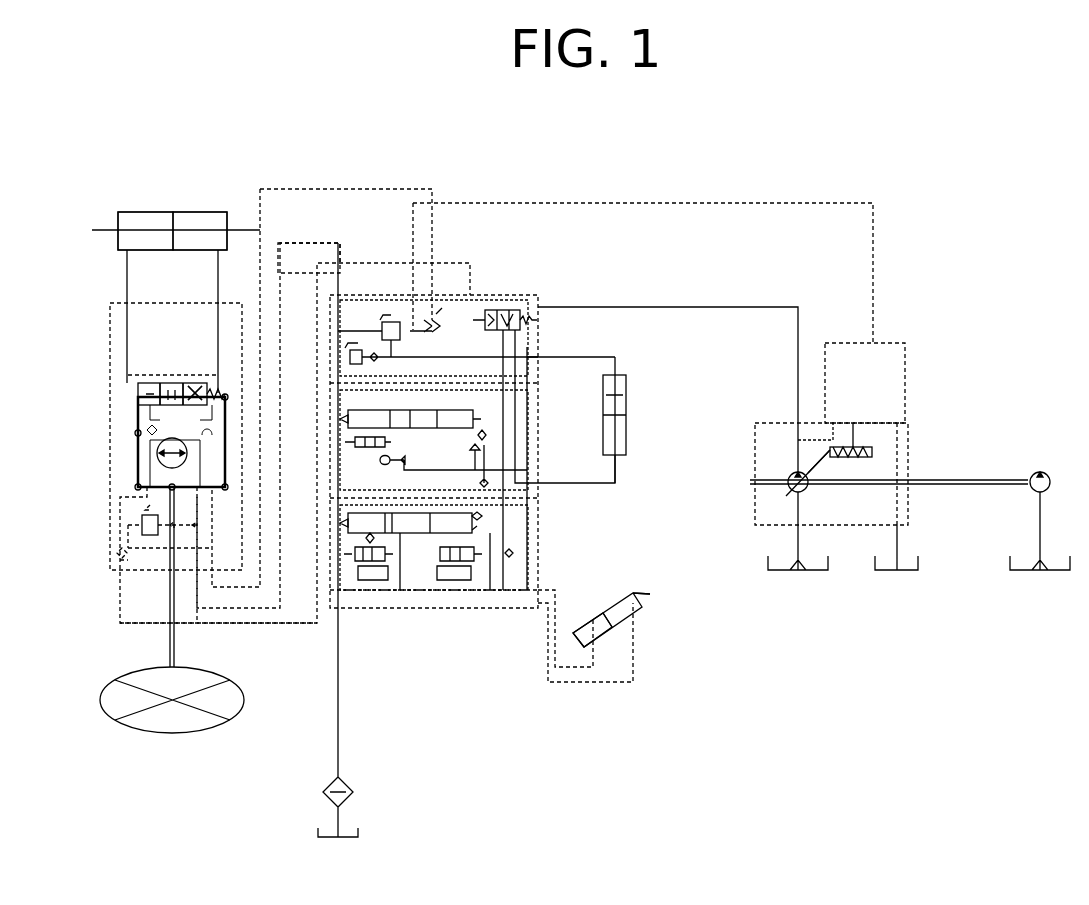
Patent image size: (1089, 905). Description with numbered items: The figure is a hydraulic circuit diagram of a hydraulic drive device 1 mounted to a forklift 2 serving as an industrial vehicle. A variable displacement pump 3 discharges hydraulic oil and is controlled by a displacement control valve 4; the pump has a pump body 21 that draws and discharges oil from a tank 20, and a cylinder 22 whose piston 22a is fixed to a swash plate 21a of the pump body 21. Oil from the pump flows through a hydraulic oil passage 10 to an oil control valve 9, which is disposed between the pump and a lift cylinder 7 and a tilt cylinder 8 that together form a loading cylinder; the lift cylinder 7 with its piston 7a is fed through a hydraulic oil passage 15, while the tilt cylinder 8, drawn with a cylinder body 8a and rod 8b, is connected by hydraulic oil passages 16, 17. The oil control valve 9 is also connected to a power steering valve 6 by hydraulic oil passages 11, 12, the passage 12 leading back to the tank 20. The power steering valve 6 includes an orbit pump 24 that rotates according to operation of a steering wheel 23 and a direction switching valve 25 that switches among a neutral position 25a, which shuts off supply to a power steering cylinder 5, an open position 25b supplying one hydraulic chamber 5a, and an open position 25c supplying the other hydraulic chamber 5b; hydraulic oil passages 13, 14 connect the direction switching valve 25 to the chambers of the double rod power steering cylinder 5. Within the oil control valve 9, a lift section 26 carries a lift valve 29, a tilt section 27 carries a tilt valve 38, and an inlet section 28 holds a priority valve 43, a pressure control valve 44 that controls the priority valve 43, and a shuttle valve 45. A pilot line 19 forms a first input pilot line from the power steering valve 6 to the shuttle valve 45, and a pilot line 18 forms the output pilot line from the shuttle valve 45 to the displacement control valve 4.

The hydraulic drive device 1 is at (598, 183).
The forklift 2 is at (932, 216).
The variable displacement pump 3 is at (754, 456).
The displacement control valve 4 is at (835, 342).
The power steering cylinder 5 is at (168, 212).
The hydraulic chamber 5a is at (130, 218).
The hydraulic chamber 5b is at (208, 218).
The power steering valve 6 is at (110, 456).
The lift cylinder 7 is at (627, 390).
The piston 7a is at (627, 430).
The tilt cylinder 8 is at (614, 600).
The cylinder body 8a is at (588, 626).
The piston rod 8b is at (640, 618).
The oil control valve 9 is at (430, 622).
The hydraulic oil passage 10 is at (673, 306).
The hydraulic oil passage 11 is at (298, 624).
The hydraulic oil passage 12 is at (306, 242).
The hydraulic oil passage 13 is at (126, 277).
The hydraulic oil passage 14 is at (217, 277).
The hydraulic oil passage 15 is at (577, 482).
The hydraulic oil passage 16 is at (549, 588).
The hydraulic oil passage 17 is at (592, 683).
The pilot line 18 is at (747, 196).
The pilot line 19 is at (330, 188).
The tank 20 is at (358, 836).
The pump body 21 is at (806, 492).
The swash plate 21a is at (810, 468).
The cylinder 22 is at (874, 452).
The piston 22a is at (834, 460).
The steering wheel 23 is at (204, 732).
The orbit pump 24 is at (137, 470).
The direction switching valve 25 is at (137, 388).
The neutral position 25a is at (166, 382).
The open position 25b is at (136, 408).
The open position 25c is at (198, 383).
The lift section 26 is at (540, 394).
The tilt section 27 is at (540, 532).
The inlet section 28 is at (540, 352).
The lift valve 29 is at (347, 415).
The tilt valve 38 is at (347, 520).
The priority valve 43 is at (490, 308).
The pressure control valve 44 is at (441, 349).
The shuttle valve 45 is at (430, 320).